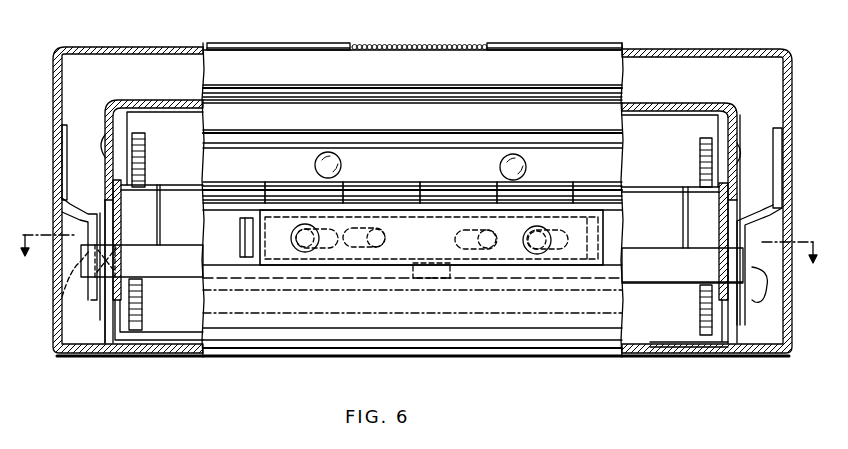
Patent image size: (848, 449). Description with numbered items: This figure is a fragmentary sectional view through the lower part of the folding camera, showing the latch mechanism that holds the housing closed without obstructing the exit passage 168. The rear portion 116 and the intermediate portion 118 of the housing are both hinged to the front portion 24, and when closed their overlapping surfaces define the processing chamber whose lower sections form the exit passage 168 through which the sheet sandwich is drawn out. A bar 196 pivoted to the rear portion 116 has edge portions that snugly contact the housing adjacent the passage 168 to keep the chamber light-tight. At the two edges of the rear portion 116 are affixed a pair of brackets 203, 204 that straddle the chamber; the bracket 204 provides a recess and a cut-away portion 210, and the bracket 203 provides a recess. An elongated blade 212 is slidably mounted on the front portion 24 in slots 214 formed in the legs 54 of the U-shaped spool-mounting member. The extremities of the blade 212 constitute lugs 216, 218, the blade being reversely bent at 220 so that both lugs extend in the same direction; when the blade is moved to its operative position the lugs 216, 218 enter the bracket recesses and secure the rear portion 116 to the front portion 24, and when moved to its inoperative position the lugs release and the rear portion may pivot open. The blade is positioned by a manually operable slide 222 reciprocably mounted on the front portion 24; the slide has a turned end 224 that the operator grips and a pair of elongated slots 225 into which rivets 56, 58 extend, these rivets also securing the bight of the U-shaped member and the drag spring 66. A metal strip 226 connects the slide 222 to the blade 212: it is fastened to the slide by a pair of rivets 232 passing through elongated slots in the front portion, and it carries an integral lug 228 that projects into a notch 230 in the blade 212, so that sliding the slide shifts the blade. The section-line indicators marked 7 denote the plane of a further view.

The rear portion 116 is at (178, 44).
The intermediate portion 118 is at (159, 98).
The bar 196 is at (393, 68).
The exit passage 168 is at (634, 77).
The bracket 204 is at (70, 130).
The bracket 203 is at (773, 133).
The drag spring 66 is at (190, 192).
The legs 54 is at (123, 208).
The slide 222 is at (255, 222).
The metal strip 226 is at (343, 228).
The rivets 232 is at (480, 230).
The rivet 58 is at (540, 226).
The rivet 56 is at (300, 248).
The turned end 224 is at (243, 243).
The elongated slots 225 is at (328, 248).
The lug 228 is at (430, 278).
The notch 230 is at (467, 278).
The slots 214 is at (118, 260).
The blade 212 is at (645, 273).
The reverse bend 220 is at (62, 297).
The lug 218 is at (143, 295).
The cut-away portion 210 is at (72, 218).
The lug 216 is at (788, 307).
The front portion 24 is at (230, 361).
The section line 7- 7 is at (419, 261).